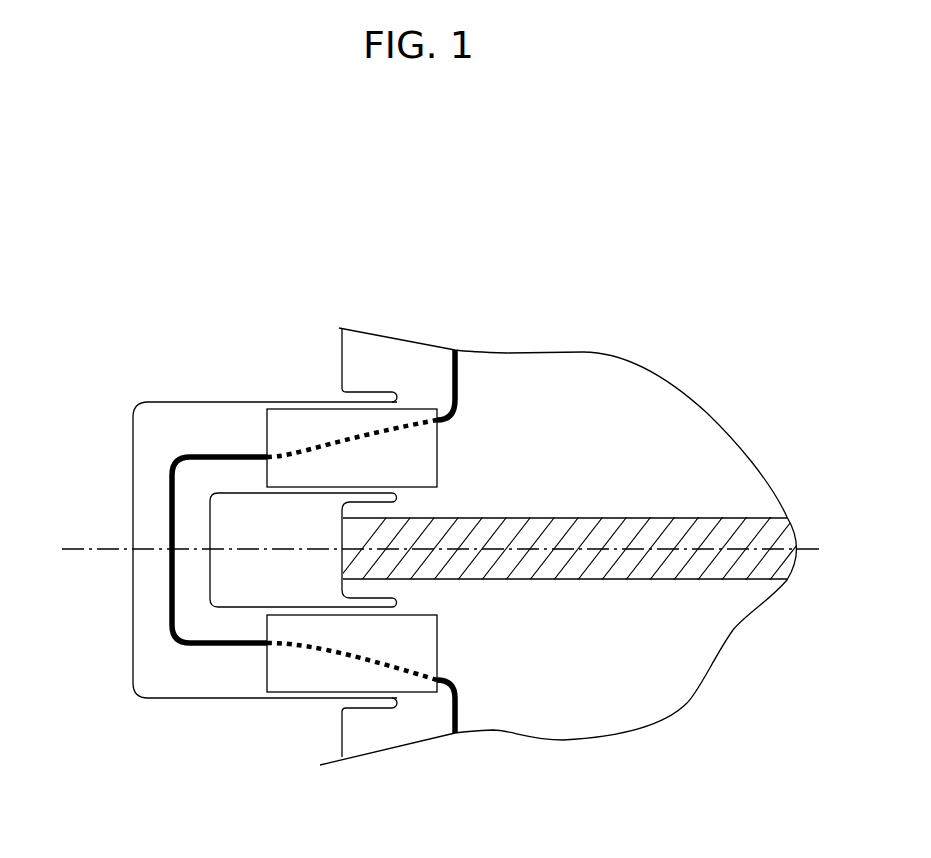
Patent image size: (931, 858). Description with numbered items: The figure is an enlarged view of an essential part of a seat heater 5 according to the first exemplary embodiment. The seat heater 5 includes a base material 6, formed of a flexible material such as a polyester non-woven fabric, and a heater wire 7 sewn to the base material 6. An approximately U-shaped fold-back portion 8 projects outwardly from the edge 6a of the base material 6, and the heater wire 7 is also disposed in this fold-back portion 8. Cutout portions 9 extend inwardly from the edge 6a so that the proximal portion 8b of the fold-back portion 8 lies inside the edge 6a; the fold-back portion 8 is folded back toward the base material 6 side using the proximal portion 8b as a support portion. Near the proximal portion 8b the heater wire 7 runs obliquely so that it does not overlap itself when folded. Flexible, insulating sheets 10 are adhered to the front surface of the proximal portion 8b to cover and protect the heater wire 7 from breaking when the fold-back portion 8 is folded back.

The seat heater 5 is at (81, 143).
The base material 6 is at (362, 728).
The edge of base material 6a is at (340, 736).
The heater wire 7 is at (173, 458).
The fold-back portion 8 is at (198, 402).
The proximal portion 8b is at (398, 400).
The cutout portion 9 is at (370, 397).
The sheet 10 is at (285, 423).